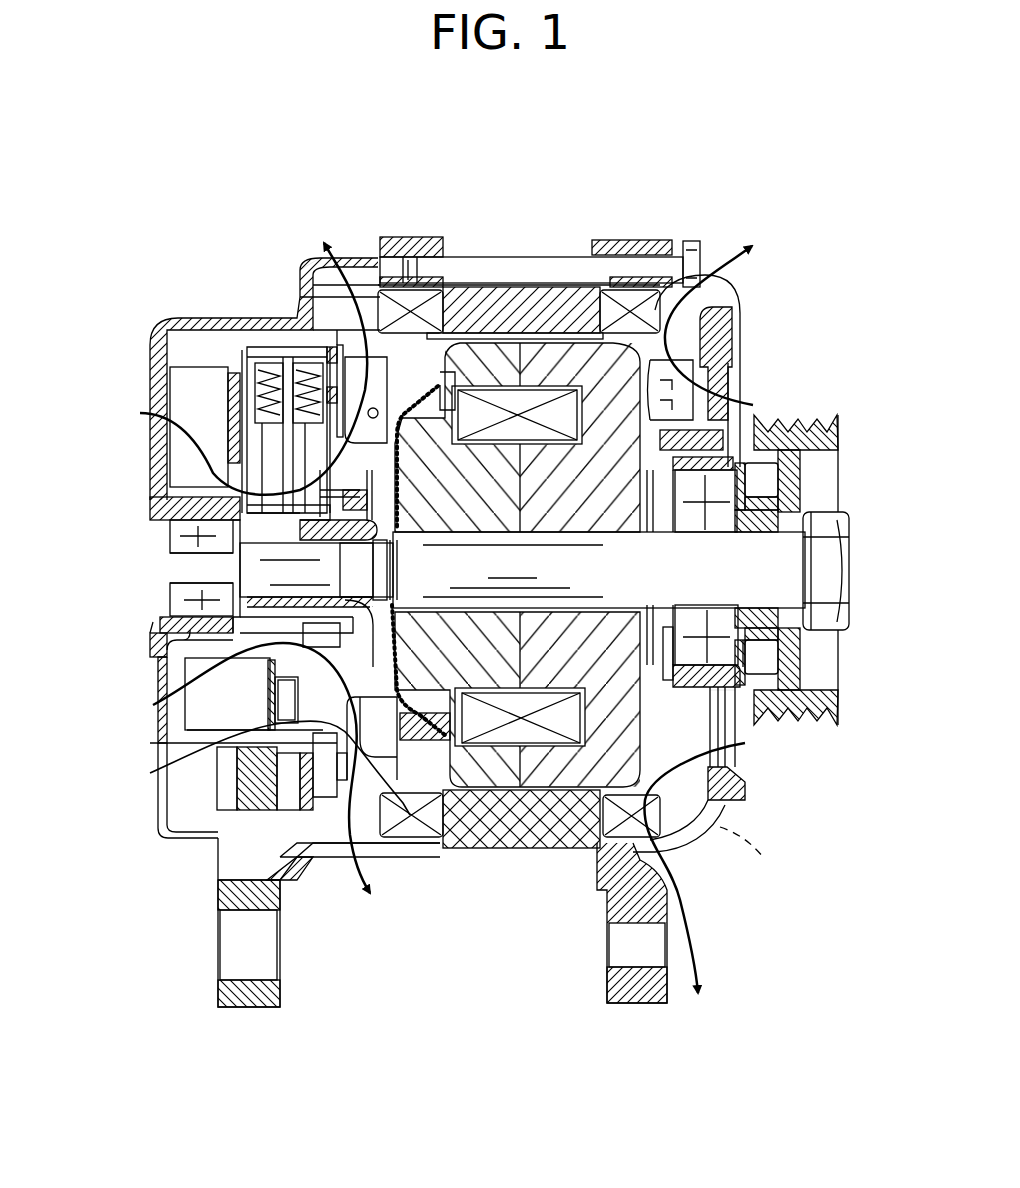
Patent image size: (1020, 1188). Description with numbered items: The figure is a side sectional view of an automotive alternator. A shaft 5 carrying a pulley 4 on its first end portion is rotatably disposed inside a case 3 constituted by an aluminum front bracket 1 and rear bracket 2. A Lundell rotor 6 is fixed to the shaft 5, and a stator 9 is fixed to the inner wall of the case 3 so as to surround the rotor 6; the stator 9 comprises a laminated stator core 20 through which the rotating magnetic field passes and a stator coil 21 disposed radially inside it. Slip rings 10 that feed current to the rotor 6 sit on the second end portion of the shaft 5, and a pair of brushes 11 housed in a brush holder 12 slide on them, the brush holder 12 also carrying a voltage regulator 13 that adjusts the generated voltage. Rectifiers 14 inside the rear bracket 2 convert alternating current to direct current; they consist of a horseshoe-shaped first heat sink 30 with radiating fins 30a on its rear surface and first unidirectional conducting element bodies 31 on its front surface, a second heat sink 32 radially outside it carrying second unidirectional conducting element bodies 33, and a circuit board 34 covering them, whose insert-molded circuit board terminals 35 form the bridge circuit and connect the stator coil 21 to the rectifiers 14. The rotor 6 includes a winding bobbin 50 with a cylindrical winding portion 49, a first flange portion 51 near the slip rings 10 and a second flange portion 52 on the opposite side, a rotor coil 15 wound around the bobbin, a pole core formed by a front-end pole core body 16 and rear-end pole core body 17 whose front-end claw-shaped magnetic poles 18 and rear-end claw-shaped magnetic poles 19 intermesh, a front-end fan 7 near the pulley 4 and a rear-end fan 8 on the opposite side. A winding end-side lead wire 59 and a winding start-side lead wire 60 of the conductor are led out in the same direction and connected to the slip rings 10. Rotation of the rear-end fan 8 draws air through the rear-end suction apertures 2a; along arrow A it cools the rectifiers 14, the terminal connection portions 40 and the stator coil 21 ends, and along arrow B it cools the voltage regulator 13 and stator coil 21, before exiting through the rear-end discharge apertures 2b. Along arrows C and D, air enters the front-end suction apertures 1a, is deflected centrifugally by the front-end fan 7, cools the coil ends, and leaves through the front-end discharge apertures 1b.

The front bracket 1 is at (743, 773).
The front-end suction apertures 1a is at (717, 393).
The front-end discharge apertures 1b is at (738, 302).
The rear bracket 2 is at (290, 860).
The rear-end suction apertures 2a is at (150, 420).
The rear-end discharge apertures 2b is at (335, 290).
The case 3 is at (743, 790).
The pulley 4 is at (832, 415).
The shaft 5 is at (778, 545).
The Lundell rotor 6 is at (690, 717).
The front-end fan 7 is at (723, 807).
The rear-end fan 8 is at (377, 730).
The stator 9 is at (503, 857).
The slip rings 10 is at (180, 600).
The brushes 11 is at (265, 428).
The brush holder 12 is at (283, 340).
The voltage regulator 13 is at (230, 400).
The rectifiers 14 is at (150, 773).
The rotor coil 15 is at (590, 827).
The front-end pole core body 16 is at (563, 780).
The rear-end pole core body 17 is at (490, 853).
The front-end claw-shaped magnetic poles 18 is at (507, 840).
The rear-end claw-shaped magnetic poles 19 is at (750, 854).
The stator core 20 is at (527, 307).
The stator coil 21 is at (628, 290).
The first heat sink 30 is at (228, 707).
The radiating fins 30a is at (225, 668).
The first unidirectional conducting element bodies 31 is at (285, 700).
The second heat sink 32 is at (240, 780).
The second unidirectional conducting element bodies 33 is at (300, 795).
The circuit board 34 is at (305, 862).
The circuit board terminals 35 is at (255, 718).
The terminal connection portions 40 is at (427, 848).
The winding portion 49 is at (550, 256).
The winding bobbin 50 is at (510, 377).
The first flange portion 51 is at (467, 395).
The second flange portion 52 is at (570, 417).
The winding end-side lead wire 59 is at (385, 360).
The winding start-side lead wire 60 is at (470, 850).
The arrow A is at (385, 878).
The arrow B is at (145, 413).
The arrow C is at (690, 960).
The arrow D is at (735, 250).